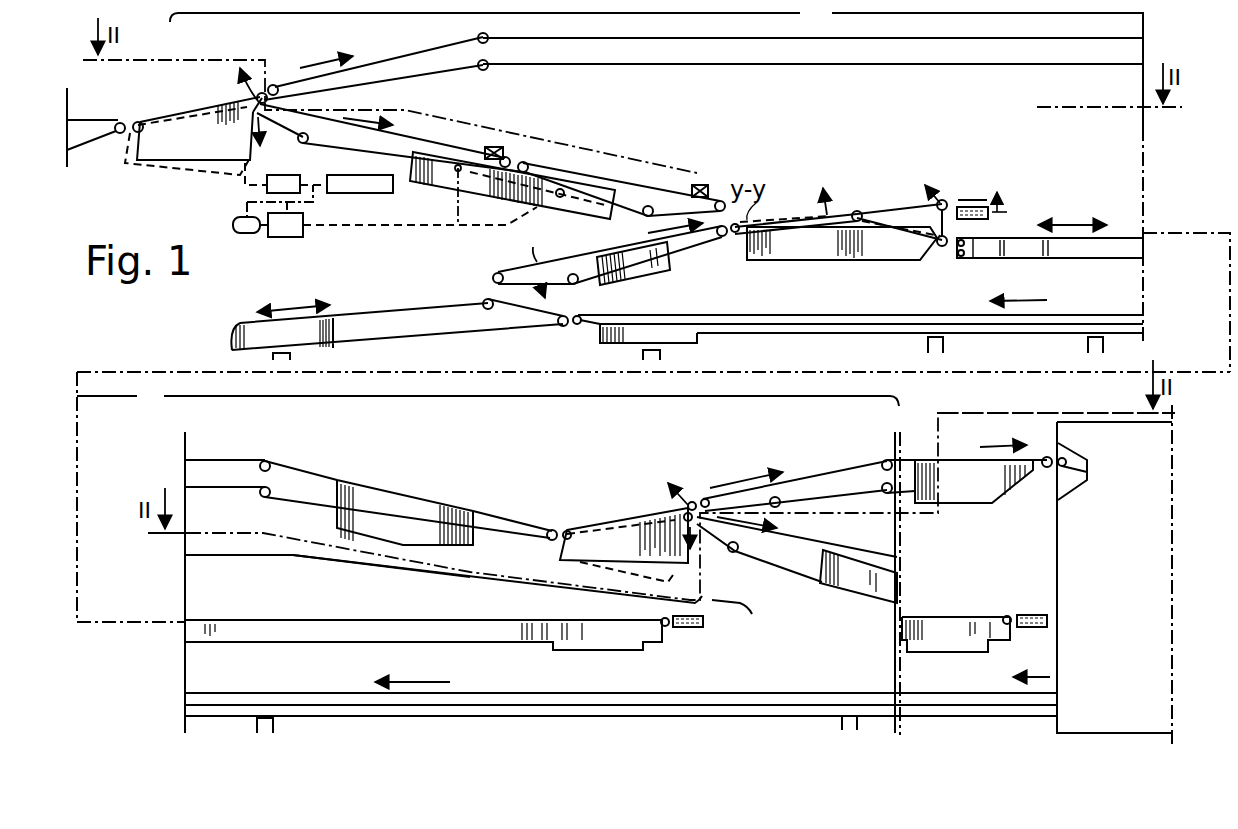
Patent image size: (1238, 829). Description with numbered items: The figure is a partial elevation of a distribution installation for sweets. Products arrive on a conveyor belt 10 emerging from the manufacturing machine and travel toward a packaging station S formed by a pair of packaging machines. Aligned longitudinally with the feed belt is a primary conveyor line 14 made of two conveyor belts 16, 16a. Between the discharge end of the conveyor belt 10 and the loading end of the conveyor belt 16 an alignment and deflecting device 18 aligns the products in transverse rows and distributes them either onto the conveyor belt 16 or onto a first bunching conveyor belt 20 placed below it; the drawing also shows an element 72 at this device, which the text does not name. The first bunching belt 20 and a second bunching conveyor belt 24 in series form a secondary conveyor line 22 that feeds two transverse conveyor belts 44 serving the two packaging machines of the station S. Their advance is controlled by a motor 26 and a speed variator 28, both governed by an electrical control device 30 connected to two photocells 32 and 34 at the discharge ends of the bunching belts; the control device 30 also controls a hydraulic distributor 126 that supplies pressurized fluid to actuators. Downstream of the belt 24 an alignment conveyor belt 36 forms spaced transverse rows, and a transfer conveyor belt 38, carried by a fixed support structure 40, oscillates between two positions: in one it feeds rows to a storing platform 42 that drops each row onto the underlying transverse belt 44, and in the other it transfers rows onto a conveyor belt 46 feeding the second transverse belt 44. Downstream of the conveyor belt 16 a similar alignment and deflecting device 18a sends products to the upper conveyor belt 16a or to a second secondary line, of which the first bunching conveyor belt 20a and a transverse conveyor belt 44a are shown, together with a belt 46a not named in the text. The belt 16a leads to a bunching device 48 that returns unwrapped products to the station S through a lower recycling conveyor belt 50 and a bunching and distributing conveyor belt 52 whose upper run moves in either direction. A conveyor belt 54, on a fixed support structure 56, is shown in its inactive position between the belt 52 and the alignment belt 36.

The conveyor belt 10 is at (92, 117).
The primary conveyor line 14 is at (653, 311).
The conveyor belt 16 is at (560, 64).
The alignment and deflecting device 18 is at (163, 96).
The pivot joint 72 is at (192, 102).
The first bunching conveyor belt 20 is at (393, 133).
The secondary conveyor line 22 is at (457, 138).
The second bunching conveyor belt 24 is at (632, 190).
The motor 26 is at (250, 234).
The speed variator 28 is at (290, 238).
The electrical control device 30 is at (363, 194).
The photocell 32 is at (507, 145).
The photocell 34 is at (700, 182).
The alignment conveyor belt 36 is at (817, 213).
The transfer conveyor belt 38 is at (900, 210).
The fixed support structure 40 is at (823, 247).
The storing platform 42 is at (970, 200).
The transverse conveyor belt 44 is at (987, 221).
The conveyor belt 46 is at (1117, 237).
The bunching device 48 is at (1147, 515).
The lower recycling conveyor belt 50 is at (260, 703).
The bunching and distributing conveyor belt 52 is at (395, 327).
The conveyor belt 54 is at (577, 268).
The fixed support structure 56 is at (647, 275).
The hydraulic distributor 126 is at (267, 188).
The conveyor belt 16a is at (823, 473).
The alignment and deflecting device 18a is at (603, 533).
The first bunching conveyor belt 20a is at (790, 552).
The transverse conveyor belt 44a is at (1035, 613).
The support plate 46a is at (947, 615).
The packaging station S is at (380, 572).